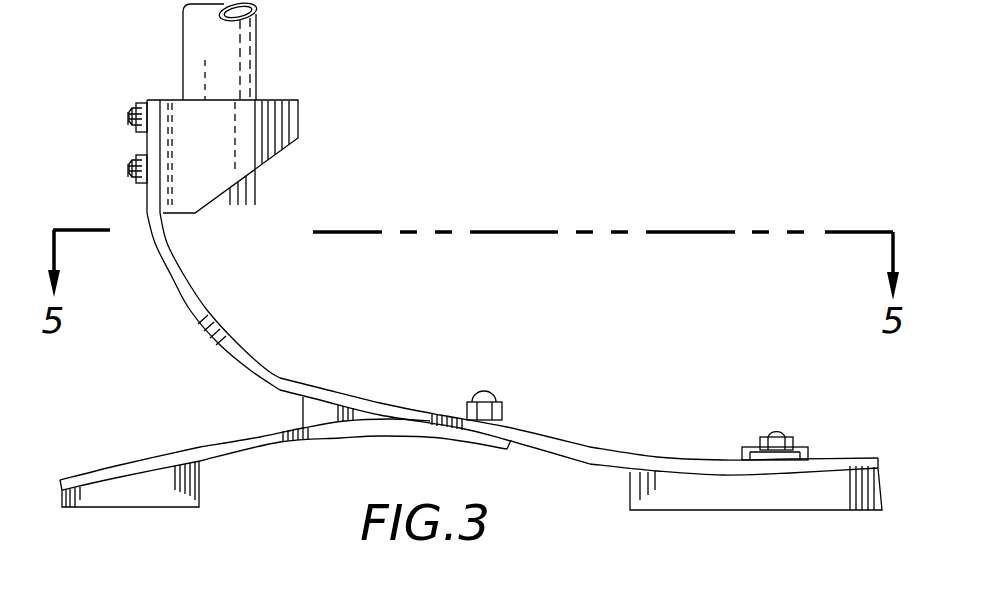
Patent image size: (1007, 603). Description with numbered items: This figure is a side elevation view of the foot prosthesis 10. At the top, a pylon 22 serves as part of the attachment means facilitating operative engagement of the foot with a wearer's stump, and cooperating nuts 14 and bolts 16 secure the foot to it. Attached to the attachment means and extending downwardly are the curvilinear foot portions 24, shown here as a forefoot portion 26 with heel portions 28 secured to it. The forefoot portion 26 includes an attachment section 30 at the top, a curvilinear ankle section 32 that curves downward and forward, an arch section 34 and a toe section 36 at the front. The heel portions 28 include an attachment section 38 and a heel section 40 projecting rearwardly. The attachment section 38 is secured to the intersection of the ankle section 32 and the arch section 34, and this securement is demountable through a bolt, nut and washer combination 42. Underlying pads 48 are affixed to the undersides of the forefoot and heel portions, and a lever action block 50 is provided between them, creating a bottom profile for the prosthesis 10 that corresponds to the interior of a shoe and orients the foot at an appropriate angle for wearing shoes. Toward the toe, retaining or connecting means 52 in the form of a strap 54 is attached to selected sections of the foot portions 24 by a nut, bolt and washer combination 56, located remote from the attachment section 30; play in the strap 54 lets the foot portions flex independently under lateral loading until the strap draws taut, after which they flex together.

The foot prosthesis 10 is at (320, 351).
The nuts 14 is at (138, 105).
The bolts 16 is at (128, 167).
The pylon 22 is at (256, 72).
The curvilinear foot portions 24 is at (222, 325).
The forefoot portion 26 is at (188, 292).
The heel portions 28 is at (237, 455).
The attachment section 30 is at (148, 240).
The curvilinear ankle section 32 is at (183, 316).
The arch section 34 is at (357, 397).
The toe section 36 is at (837, 460).
The attachment section 38 is at (447, 442).
The heel section 40 is at (163, 452).
The bolt, nut and washer combinations 42 is at (495, 410).
The underlying pads 48 is at (155, 508).
The lever action blocks 50 is at (303, 412).
The retaining or connecting means 52 is at (760, 427).
The strap 54 is at (742, 452).
The nut, bolt and washer combinations 56 is at (788, 438).